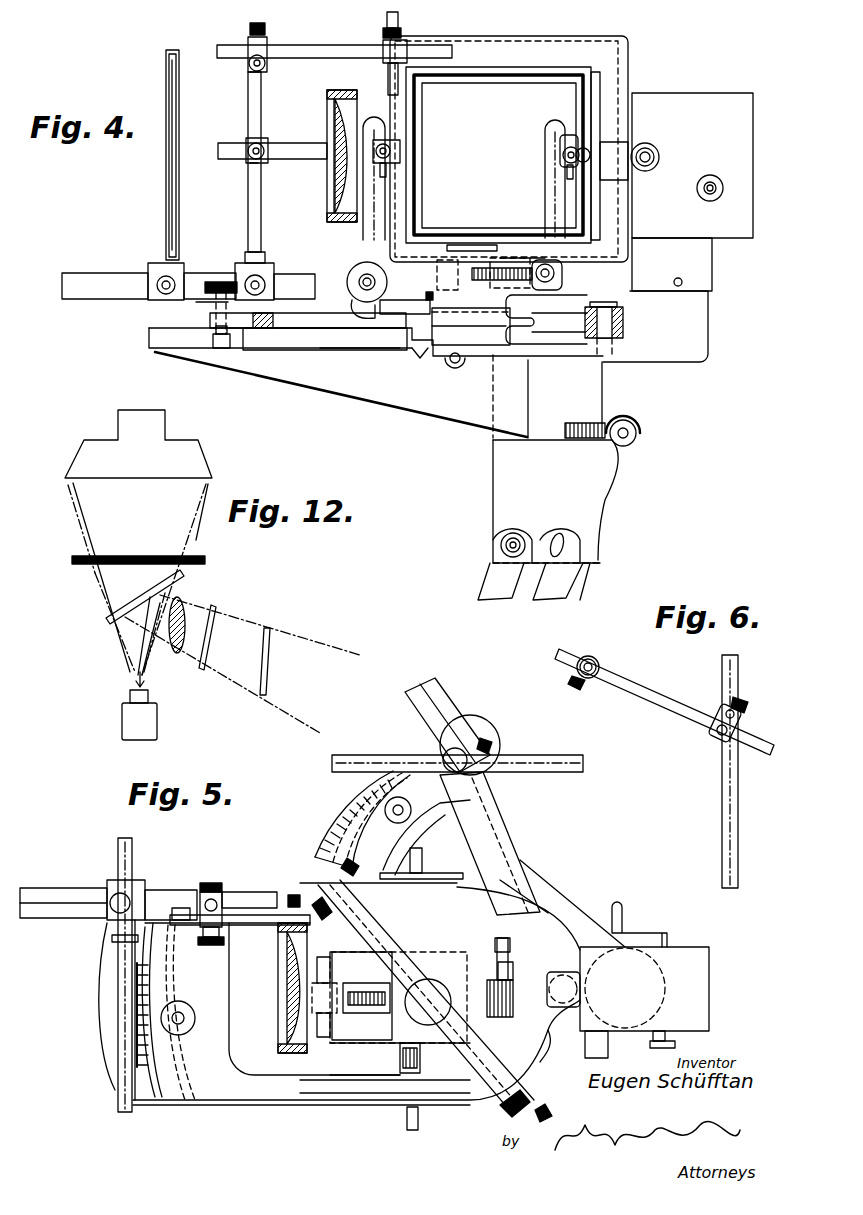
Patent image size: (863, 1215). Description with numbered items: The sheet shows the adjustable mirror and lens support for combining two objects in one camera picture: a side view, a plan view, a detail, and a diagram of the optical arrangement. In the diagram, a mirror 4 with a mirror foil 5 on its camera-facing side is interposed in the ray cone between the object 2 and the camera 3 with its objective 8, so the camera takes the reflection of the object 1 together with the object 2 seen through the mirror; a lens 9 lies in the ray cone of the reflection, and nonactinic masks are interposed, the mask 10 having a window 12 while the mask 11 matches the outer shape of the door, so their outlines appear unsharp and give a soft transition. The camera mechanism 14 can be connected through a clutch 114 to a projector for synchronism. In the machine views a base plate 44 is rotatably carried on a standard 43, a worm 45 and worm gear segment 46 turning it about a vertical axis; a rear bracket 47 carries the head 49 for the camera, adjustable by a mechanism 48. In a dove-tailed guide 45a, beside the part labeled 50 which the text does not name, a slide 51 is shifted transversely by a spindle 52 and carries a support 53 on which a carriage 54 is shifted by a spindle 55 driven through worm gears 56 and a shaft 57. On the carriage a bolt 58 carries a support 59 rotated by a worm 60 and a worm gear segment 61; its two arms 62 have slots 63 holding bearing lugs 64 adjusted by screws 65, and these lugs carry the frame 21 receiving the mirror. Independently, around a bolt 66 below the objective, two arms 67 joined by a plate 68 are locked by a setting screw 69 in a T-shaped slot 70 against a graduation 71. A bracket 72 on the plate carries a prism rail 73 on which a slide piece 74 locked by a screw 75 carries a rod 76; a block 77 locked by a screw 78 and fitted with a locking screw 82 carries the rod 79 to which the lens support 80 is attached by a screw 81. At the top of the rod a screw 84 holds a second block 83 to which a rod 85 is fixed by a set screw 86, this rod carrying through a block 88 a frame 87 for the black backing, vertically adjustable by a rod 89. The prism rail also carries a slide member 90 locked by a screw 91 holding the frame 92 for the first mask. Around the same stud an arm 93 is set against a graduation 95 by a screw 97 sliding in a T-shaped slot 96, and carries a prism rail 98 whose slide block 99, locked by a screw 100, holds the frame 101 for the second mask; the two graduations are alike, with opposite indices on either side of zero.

In FIG. 12, the object 1 is at (208, 468).
In FIG. 12, the object 2 is at (266, 682).
In FIG. 4, the camera 3 is at (692, 192).
In FIG. 12, the camera 3 is at (158, 728).
In FIG. 5, the camera 3 is at (644, 1002).
In FIG. 12, the mirror 4 is at (168, 588).
In FIG. 12, the mirror foil 5 is at (112, 625).
In FIG. 4, the objective 8 is at (625, 156).
In FIG. 5, the objective 8 is at (563, 989).
In FIG. 4, the lens 9 is at (335, 178).
In FIG. 12, the lens 9 is at (183, 612).
In FIG. 5, the lens 9 is at (285, 1000).
In FIG. 4, the mask 10 is at (166, 88).
In FIG. 12, the mask 10 is at (208, 672).
In FIG. 12, the mask 11 is at (84, 570).
In FIG. 12, the window 12 is at (214, 640).
In FIG. 5, the mechanism 14 is at (645, 933).
In FIG. 4, the frame 21 is at (492, 76).
In FIG. 5, the frame 21 is at (395, 945).
In FIG. 4, the standard 43 is at (537, 503).
In FIG. 4, the base plate 44 is at (463, 416).
In FIG. 5, the base plate 44 is at (105, 1000).
In FIG. 4, the worm 45 is at (636, 426).
In FIG. 4, the dove-tailed guide 45a is at (425, 355).
In FIG. 4, the worm gear segment 46 is at (577, 423).
In FIG. 4, the bracket 47 is at (700, 323).
In FIG. 4, the mechanism 48 is at (683, 282).
In FIG. 4, the head 49 is at (708, 268).
In FIG. 4, the slide plate 50 is at (413, 366).
In FIG. 5, the slide plate 50 is at (365, 1070).
In FIG. 4, the slide 51 is at (471, 328).
In FIG. 5, the slide 51 is at (442, 900).
In FIG. 4, the spindle 52 is at (458, 370).
In FIG. 5, the spindle 52 is at (422, 860).
In FIG. 4, the support 53 is at (396, 300).
In FIG. 5, the support 53 is at (340, 1040).
In FIG. 4, the carriage 54 is at (506, 340).
In FIG. 5, the carriage 54 is at (420, 1040).
In FIG. 4, the spindle 55 is at (402, 350).
In FIG. 5, the spindle 55 is at (373, 994).
In FIG. 4, the worm gears 56 is at (350, 296).
In FIG. 4, the shaft 57 is at (358, 276).
In FIG. 5, the shaft 57 is at (312, 985).
In FIG. 4, the bolt 58 is at (472, 245).
In FIG. 5, the bolt 58 is at (428, 1002).
In FIG. 4, the support 59 is at (447, 262).
In FIG. 5, the support 59 is at (372, 970).
In FIG. 4, the worm 60 is at (557, 273).
In FIG. 5, the worm 60 is at (513, 1003).
In FIG. 4, the worm gear segment 61 is at (512, 262).
In FIG. 4, the arms 62 is at (363, 222).
In FIG. 5, the arms 62 is at (328, 912).
In FIG. 4, the slots 63 is at (385, 172).
In FIG. 4, the bearing lugs 64 is at (392, 152).
In FIG. 5, the bearing lugs 64 is at (340, 900).
In FIG. 4, the screws 65 is at (392, 142).
In FIG. 5, the screws 65 is at (318, 880).
In FIG. 4, the bolt 66 is at (603, 290).
In FIG. 5, the bolt 66 is at (588, 972).
In FIG. 4, the arms 67 is at (315, 340).
In FIG. 5, the arms 67 is at (290, 880).
In FIG. 4, the plate 68 is at (262, 332).
In FIG. 5, the plate 68 is at (230, 1000).
In FIG. 4, the setting screw 69 is at (221, 280).
In FIG. 5, the setting screw 69 is at (193, 1020).
In FIG. 4, the T-shaped slot 70 is at (220, 350).
In FIG. 5, the T-shaped slot 70 is at (206, 885).
In FIG. 5, the graduation 71 is at (150, 1100).
In FIG. 4, the bracket 72 is at (200, 303).
In FIG. 5, the bracket 72 is at (178, 922).
In FIG. 4, the prism rail 73 is at (90, 278).
In FIG. 5, the prism rail 73 is at (68, 890).
In FIG. 4, the slide piece 74 is at (272, 270).
In FIG. 4, the screw 75 is at (266, 286).
In FIG. 4, the rod 76 is at (261, 222).
In FIG. 5, the rod 76 is at (235, 890).
In FIG. 4, the block 77 is at (247, 142).
In FIG. 4, the screw 78 is at (266, 145).
In FIG. 5, the screw 78 is at (213, 890).
In FIG. 4, the rod 79 is at (296, 159).
In FIG. 5, the rod 79 is at (275, 926).
In FIG. 4, the support 80 is at (334, 90).
In FIG. 5, the support 80 is at (280, 1036).
In FIG. 5, the screw 81 is at (290, 893).
In FIG. 4, the locking screw 82 is at (248, 163).
In FIG. 5, the locking screw 82 is at (217, 945).
In FIG. 4, the second block 83 is at (249, 46).
In FIG. 6, the second block 83 is at (598, 665).
In FIG. 4, the screw 84 is at (251, 68).
In FIG. 6, the screw 84 is at (580, 686).
In FIG. 5, the screw 84 is at (210, 946).
In FIG. 4, the rod 85 is at (322, 50).
In FIG. 6, the rod 85 is at (660, 698).
In FIG. 4, the set screw 86 is at (266, 30).
In FIG. 6, the set screw 86 is at (588, 658).
In FIG. 4, the frame 87 is at (388, 78).
In FIG. 6, the frame 87 is at (722, 790).
In FIG. 4, the block 88 is at (400, 48).
In FIG. 6, the block 88 is at (716, 738).
In FIG. 4, the rod 89 is at (387, 18).
In FIG. 6, the rod 89 is at (748, 708).
In FIG. 4, the slide member 90 is at (156, 266).
In FIG. 5, the slide member 90 is at (110, 878).
In FIG. 4, the screw 91 is at (157, 286).
In FIG. 5, the screw 91 is at (112, 940).
In FIG. 4, the frame 92 is at (166, 178).
In FIG. 5, the frame 92 is at (118, 968).
In FIG. 4, the arm 93 is at (535, 302).
In FIG. 5, the arm 93 is at (555, 896).
In FIG. 5, the graduation 95 is at (330, 845).
In FIG. 5, the T-shaped slot 96 is at (341, 866).
In FIG. 5, the screw 97 is at (420, 822).
In FIG. 5, the prism rail 98 is at (440, 700).
In FIG. 5, the slide block 99 is at (480, 718).
In FIG. 5, the screw 100 is at (495, 742).
In FIG. 5, the frame 101 is at (540, 775).
In FIG. 4, the clutch 114 is at (708, 200).
In FIG. 5, the clutch 114 is at (645, 1037).